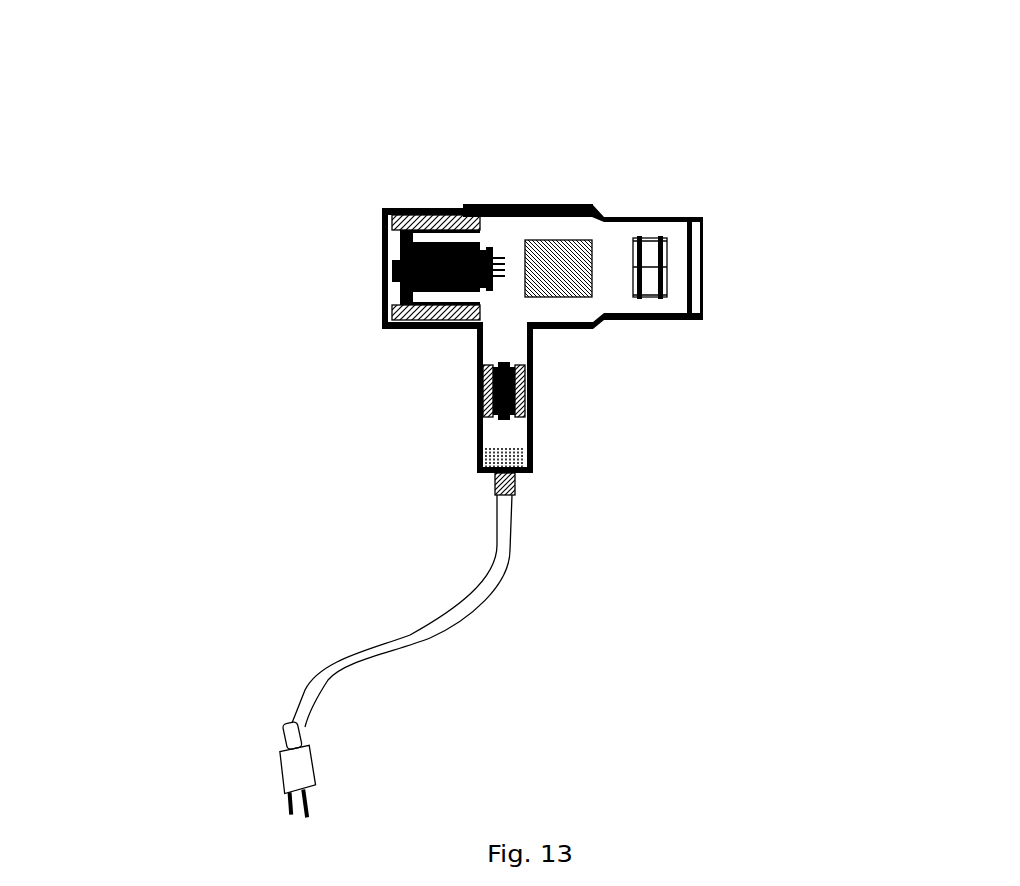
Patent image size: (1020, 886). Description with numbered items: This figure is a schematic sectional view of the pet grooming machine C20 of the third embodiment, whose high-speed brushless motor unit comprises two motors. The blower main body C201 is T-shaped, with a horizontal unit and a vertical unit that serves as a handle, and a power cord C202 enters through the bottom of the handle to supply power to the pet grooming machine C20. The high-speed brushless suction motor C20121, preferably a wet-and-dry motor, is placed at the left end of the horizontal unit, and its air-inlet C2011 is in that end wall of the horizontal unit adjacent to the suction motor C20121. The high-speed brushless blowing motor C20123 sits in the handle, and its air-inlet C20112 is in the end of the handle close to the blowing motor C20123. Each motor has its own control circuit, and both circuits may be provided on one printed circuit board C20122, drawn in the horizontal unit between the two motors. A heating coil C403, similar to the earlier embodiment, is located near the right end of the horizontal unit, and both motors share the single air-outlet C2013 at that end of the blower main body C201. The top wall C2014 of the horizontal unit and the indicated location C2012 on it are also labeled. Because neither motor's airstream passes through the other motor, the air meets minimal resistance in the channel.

The pet grooming machine C20 is at (160, 128).
The blower main body C201 is at (552, 206).
The air-inlet C2011 is at (380, 243).
The top air inlet C2012 is at (513, 196).
The air-outlet C2013 is at (692, 265).
The housing top cover C2014 is at (462, 207).
The high-speed brushless suction motor C20121 is at (403, 290).
The printed circuit board C20122 is at (557, 297).
The high-speed brushless blowing motor C20123 is at (478, 403).
The air-inlet C20112 is at (525, 475).
The heating coil C403 is at (662, 300).
The power cord C202 is at (398, 637).